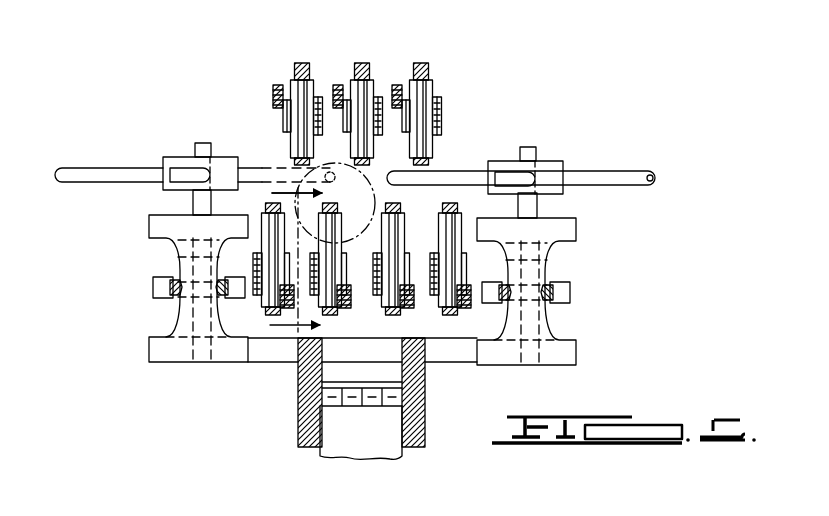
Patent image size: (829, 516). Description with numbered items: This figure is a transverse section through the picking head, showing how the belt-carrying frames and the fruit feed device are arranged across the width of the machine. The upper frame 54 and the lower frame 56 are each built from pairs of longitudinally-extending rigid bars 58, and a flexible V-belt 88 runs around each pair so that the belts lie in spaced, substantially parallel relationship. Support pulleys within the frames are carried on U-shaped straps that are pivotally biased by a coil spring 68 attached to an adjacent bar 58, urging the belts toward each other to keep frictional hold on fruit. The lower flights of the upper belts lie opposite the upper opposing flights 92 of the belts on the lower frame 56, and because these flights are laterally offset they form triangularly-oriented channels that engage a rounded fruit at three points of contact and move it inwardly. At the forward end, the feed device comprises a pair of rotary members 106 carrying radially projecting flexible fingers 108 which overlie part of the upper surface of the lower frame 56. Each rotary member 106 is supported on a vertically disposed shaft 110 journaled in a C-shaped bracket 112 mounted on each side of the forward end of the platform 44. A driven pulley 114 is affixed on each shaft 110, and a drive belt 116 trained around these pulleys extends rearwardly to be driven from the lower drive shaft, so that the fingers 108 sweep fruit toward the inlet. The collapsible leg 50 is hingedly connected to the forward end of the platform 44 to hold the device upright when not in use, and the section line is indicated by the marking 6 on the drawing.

The rotary member 106 is at (172, 160).
The flexible finger 108 is at (180, 184).
The shaft 110 is at (198, 203).
The C-shaped bracket 112 is at (163, 233).
The drive belt 116 is at (153, 290).
The driven pulley 114 is at (170, 302).
The coil spring 68 is at (273, 92).
The flexible V-belt 88 is at (360, 64).
The upper frame 54 is at (448, 94).
The collapsible leg 50 is at (411, 203).
The lower frame 56 is at (464, 214).
The upper opposing flight 92 is at (452, 208).
The rigid bar 58 is at (466, 282).
The lower contactor units and direction arrows 6 is at (350, 188).
The platform 44 is at (443, 357).